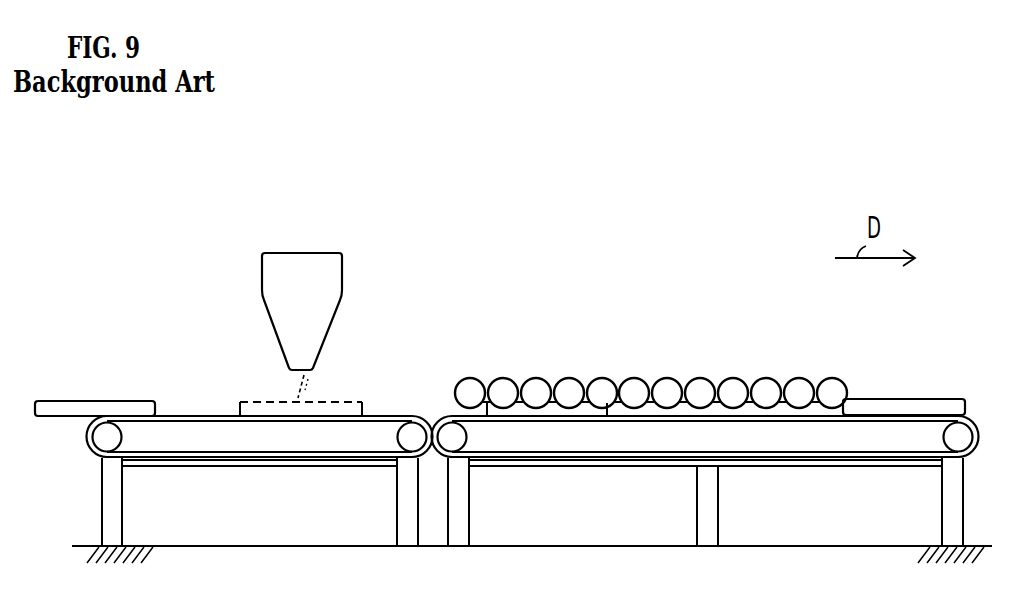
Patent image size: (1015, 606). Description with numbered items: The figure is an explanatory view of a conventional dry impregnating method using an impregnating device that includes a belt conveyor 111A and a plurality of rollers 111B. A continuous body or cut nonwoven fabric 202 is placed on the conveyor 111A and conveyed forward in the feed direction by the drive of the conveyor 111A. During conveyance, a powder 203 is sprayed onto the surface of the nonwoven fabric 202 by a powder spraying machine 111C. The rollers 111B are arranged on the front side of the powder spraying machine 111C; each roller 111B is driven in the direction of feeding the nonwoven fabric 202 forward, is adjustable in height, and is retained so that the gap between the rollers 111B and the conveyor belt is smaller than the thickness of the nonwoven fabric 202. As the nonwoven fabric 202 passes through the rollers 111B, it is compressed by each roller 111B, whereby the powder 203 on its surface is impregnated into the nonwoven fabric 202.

The belt conveyor 111A is at (657, 479).
The rollers 111B is at (530, 381).
The powder spraying machine 111C is at (337, 311).
The nonwoven fabric 202 is at (88, 401).
The powder 203 is at (318, 376).